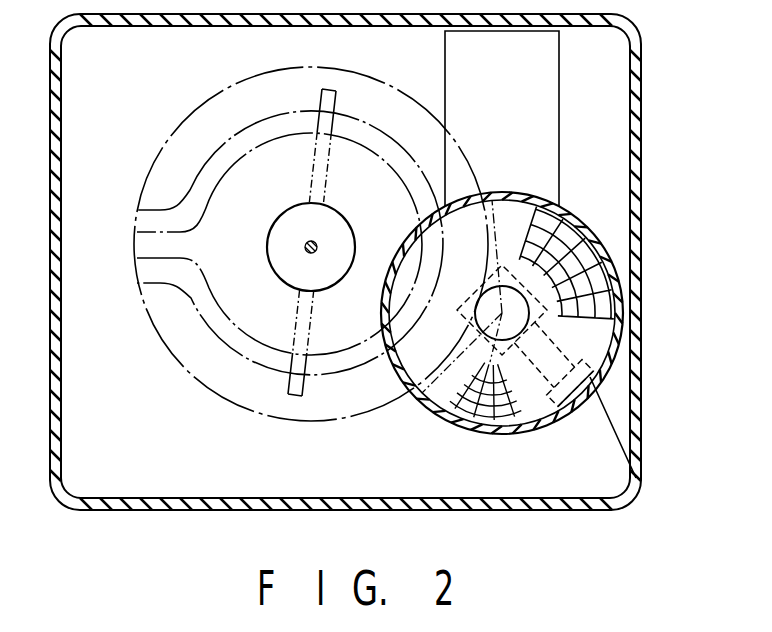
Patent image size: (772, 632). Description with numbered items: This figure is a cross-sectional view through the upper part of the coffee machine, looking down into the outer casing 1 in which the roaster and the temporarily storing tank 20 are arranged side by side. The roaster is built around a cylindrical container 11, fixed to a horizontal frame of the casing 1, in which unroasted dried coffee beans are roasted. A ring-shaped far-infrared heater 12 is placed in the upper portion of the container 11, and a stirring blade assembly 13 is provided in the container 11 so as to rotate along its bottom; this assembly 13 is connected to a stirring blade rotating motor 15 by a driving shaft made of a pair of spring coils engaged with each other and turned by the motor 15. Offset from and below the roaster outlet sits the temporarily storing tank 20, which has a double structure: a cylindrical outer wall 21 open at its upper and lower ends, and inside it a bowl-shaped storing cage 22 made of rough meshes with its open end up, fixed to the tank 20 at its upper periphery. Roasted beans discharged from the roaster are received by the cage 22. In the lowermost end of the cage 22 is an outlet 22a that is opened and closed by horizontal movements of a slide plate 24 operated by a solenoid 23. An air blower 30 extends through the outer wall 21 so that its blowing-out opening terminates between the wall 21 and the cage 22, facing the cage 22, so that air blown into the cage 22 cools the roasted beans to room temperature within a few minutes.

The outer casing 1 is at (634, 151).
The cylindrical container 11 is at (158, 150).
The ring-shaped far-infrared heater 12 is at (231, 358).
The stirring blade assembly 13 is at (328, 187).
The stirring blade rotating motor 15 is at (268, 243).
The temporarily storing tank 20 is at (428, 414).
The cylindrical outer wall 21 is at (617, 276).
The storing cage 22 is at (592, 220).
The outlet 22a is at (505, 285).
The solenoid 23 is at (590, 422).
The slide plate 24 is at (548, 328).
The air blower 30 is at (543, 96).